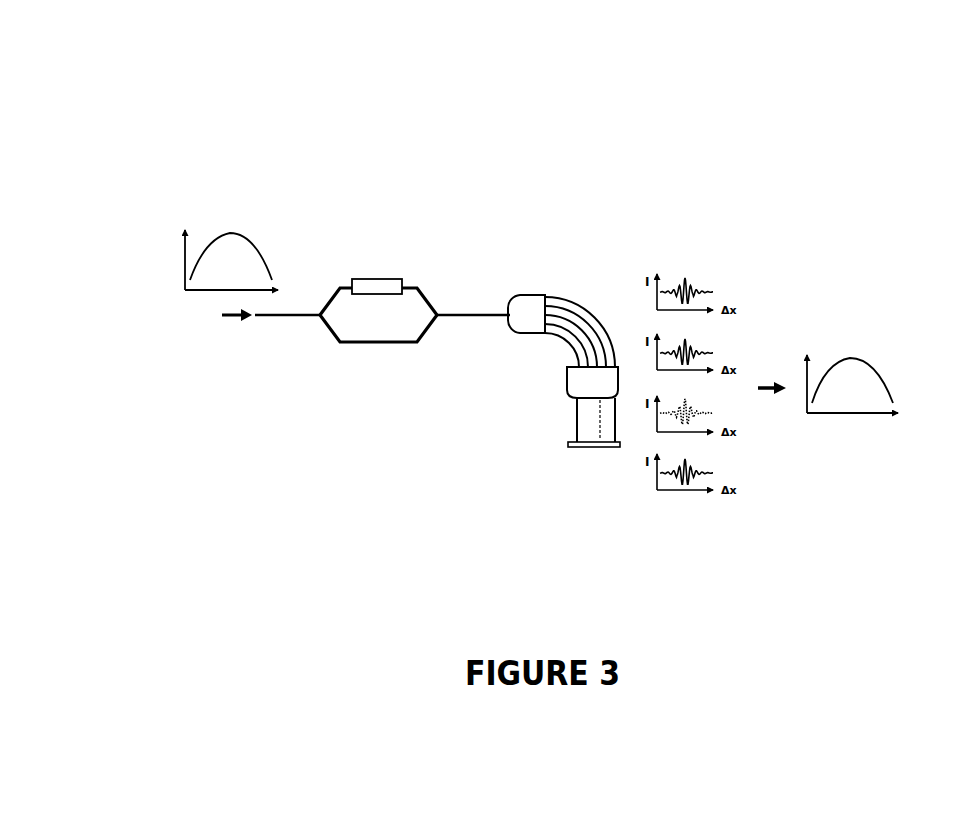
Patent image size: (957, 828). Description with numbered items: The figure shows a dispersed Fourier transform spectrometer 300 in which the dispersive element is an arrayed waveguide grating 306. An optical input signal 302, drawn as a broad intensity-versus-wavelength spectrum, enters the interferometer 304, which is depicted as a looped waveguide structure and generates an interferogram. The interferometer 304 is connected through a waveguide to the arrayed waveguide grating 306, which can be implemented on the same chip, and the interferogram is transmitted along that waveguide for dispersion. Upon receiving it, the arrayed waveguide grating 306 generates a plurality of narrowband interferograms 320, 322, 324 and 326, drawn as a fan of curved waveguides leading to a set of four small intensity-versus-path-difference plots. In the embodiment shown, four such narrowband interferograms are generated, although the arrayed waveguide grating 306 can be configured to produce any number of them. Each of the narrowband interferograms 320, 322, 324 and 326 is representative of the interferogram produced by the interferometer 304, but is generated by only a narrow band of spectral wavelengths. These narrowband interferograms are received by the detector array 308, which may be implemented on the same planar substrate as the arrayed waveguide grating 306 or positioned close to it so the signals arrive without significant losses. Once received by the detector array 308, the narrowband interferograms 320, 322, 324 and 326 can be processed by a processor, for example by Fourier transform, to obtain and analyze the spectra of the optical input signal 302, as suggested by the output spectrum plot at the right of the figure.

The spectrometer 300 is at (477, 157).
The optical input signal 302 is at (267, 250).
The interferometer 304 is at (427, 297).
The arrayed waveguide grating 306 is at (575, 300).
The detector array 308 is at (575, 440).
The narrowband interferogram 320 is at (725, 283).
The narrowband interferogram 322 is at (723, 338).
The narrowband interferogram 324 is at (732, 410).
The narrowband interferogram 326 is at (732, 468).